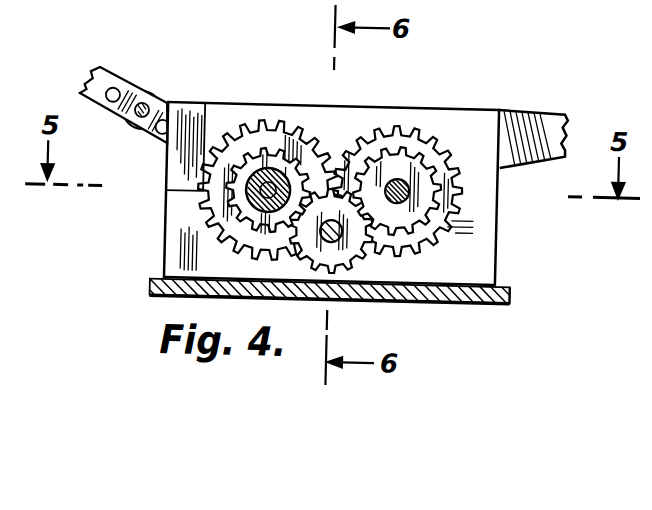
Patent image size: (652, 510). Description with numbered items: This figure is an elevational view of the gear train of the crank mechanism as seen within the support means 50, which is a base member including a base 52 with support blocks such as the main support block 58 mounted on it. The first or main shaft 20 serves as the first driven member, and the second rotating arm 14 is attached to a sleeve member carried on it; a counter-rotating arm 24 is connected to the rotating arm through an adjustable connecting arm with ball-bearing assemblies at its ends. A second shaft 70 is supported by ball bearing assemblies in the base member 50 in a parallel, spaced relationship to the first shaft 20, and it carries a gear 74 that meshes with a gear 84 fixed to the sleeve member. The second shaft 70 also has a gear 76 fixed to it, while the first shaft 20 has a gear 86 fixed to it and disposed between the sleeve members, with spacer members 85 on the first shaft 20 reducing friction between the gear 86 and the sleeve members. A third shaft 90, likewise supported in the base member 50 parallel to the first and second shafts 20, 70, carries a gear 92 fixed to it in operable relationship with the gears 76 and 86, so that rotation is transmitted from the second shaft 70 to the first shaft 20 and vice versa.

The second rotating arm 14 is at (566, 118).
The first shaft 20 is at (250, 199).
The counter-rotating arm 24 is at (104, 77).
The support means 50 is at (518, 296).
The base 52 is at (154, 291).
The main support block 58 is at (478, 184).
The second shaft 70 is at (466, 214).
The gear 74 is at (386, 126).
The gear 76 is at (428, 128).
The gear 84 is at (241, 129).
The spacer member 85 is at (250, 205).
The gear 86 is at (275, 126).
The third shaft 90 is at (380, 301).
The gear 92 is at (319, 270).